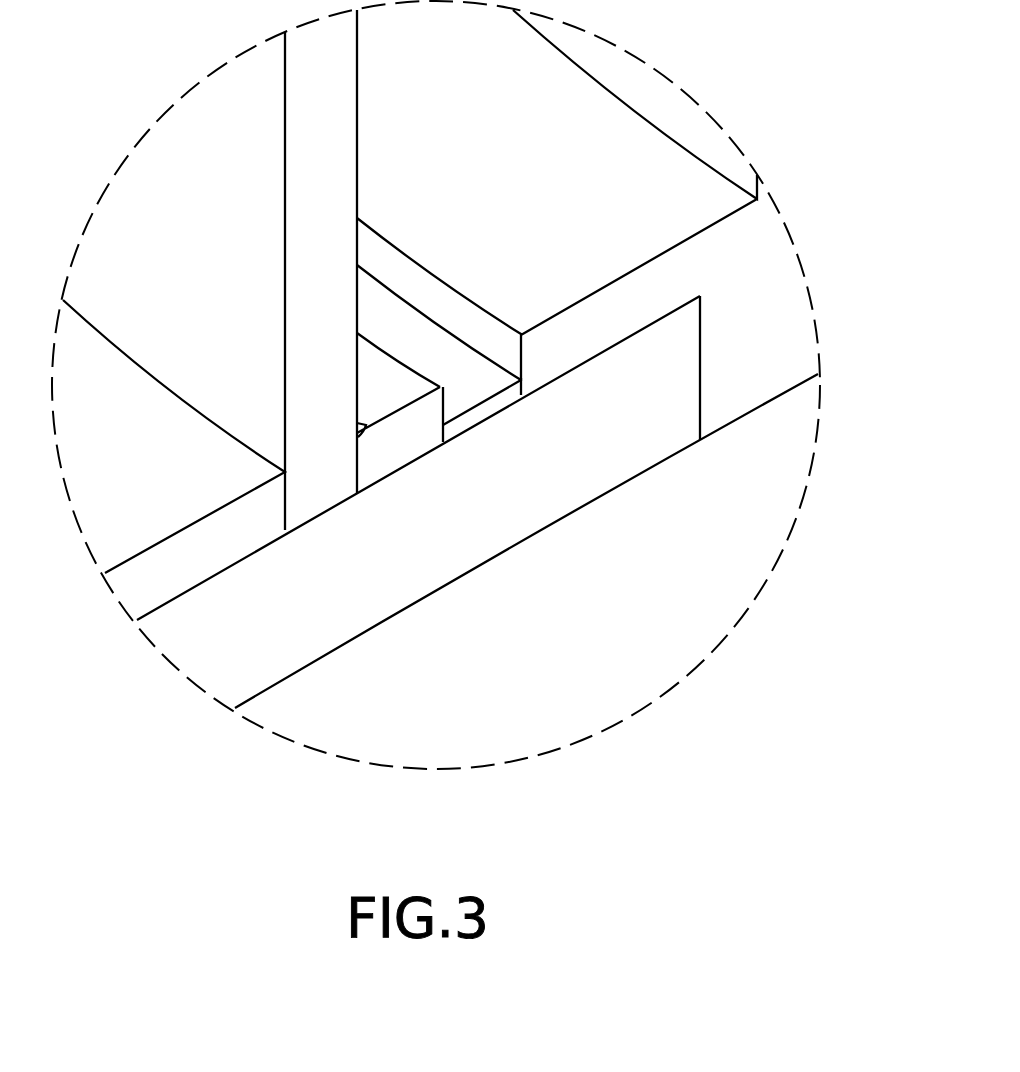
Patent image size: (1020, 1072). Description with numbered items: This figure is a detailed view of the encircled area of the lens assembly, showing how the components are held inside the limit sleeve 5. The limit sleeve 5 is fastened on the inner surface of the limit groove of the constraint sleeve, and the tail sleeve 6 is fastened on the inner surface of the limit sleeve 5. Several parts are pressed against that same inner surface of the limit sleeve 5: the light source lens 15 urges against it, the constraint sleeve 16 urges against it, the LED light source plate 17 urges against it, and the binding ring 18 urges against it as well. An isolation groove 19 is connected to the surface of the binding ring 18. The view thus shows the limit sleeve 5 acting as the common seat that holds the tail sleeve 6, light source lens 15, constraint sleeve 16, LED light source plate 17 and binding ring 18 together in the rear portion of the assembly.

The limit sleeve 5 is at (265, 625).
The tail sleeve 6 is at (723, 315).
The light source lens 15 is at (170, 477).
The constraint sleeve 16 is at (210, 183).
The LED light source plate 17 is at (386, 440).
The binding ring 18 is at (463, 393).
The isolation groove 19 is at (573, 340).